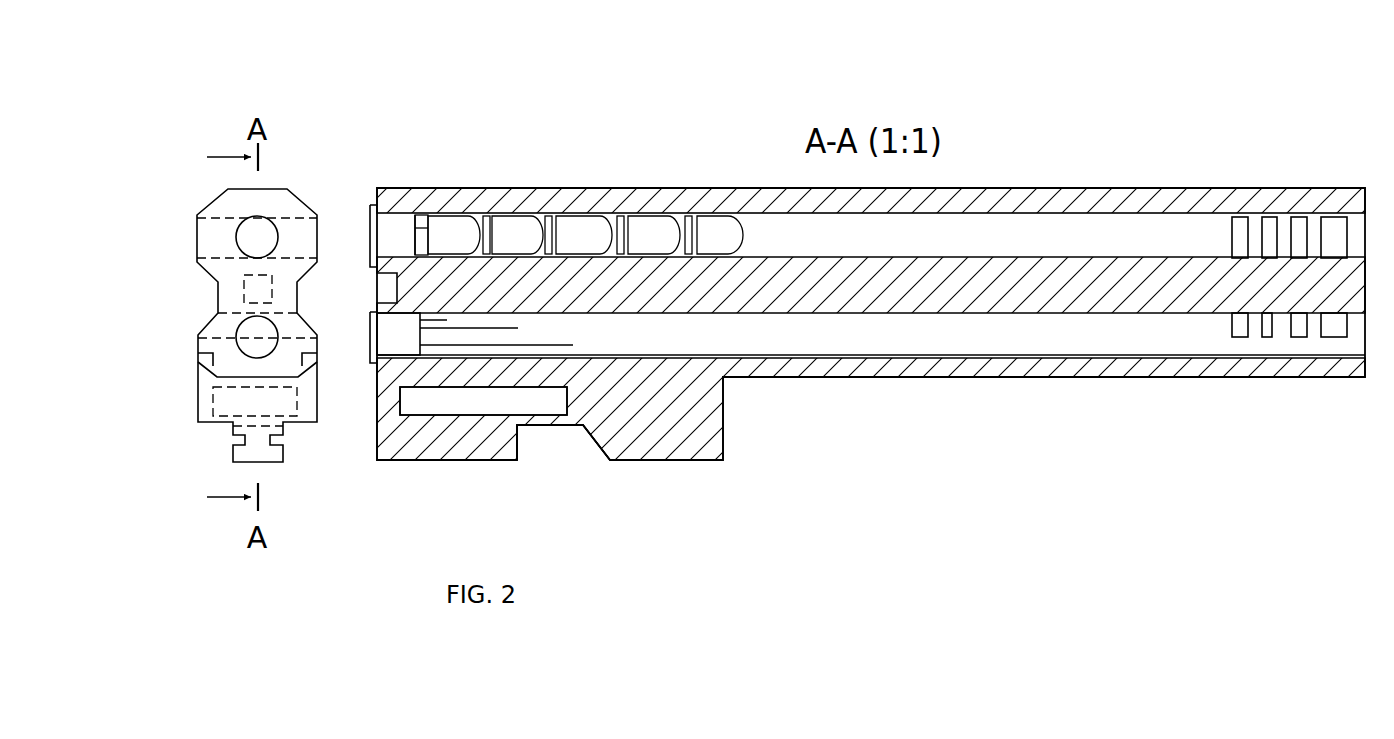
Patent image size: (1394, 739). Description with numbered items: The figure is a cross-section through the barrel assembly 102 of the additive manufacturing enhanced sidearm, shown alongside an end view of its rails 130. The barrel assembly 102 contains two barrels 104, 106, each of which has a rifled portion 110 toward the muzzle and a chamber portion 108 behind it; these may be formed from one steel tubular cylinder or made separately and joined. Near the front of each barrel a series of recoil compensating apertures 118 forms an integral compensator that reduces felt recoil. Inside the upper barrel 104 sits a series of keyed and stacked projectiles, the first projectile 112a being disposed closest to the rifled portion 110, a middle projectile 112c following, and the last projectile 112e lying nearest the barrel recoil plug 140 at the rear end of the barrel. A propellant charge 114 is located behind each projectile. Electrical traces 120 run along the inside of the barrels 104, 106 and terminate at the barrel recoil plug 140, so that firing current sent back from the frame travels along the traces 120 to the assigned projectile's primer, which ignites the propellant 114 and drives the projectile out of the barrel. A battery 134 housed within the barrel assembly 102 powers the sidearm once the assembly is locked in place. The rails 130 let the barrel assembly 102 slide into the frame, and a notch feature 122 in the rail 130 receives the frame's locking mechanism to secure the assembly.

The barrel assembly 102 is at (867, 389).
The barrel 104 is at (1163, 205).
The barrel 106 is at (1115, 362).
The chamber portion 108 is at (602, 334).
The rifled portion 110 is at (1040, 325).
The projectile 112a is at (715, 229).
The projectile 112c is at (572, 232).
The projectile 112e is at (440, 236).
The propellant charge 114 is at (546, 232).
The compensating apertures 118 is at (1347, 214).
The electrical traces 120 is at (498, 346).
The notch feature 122 is at (528, 447).
The rails 130 is at (203, 360).
The battery 134 is at (441, 401).
The barrel recoil plug 140 is at (392, 236).